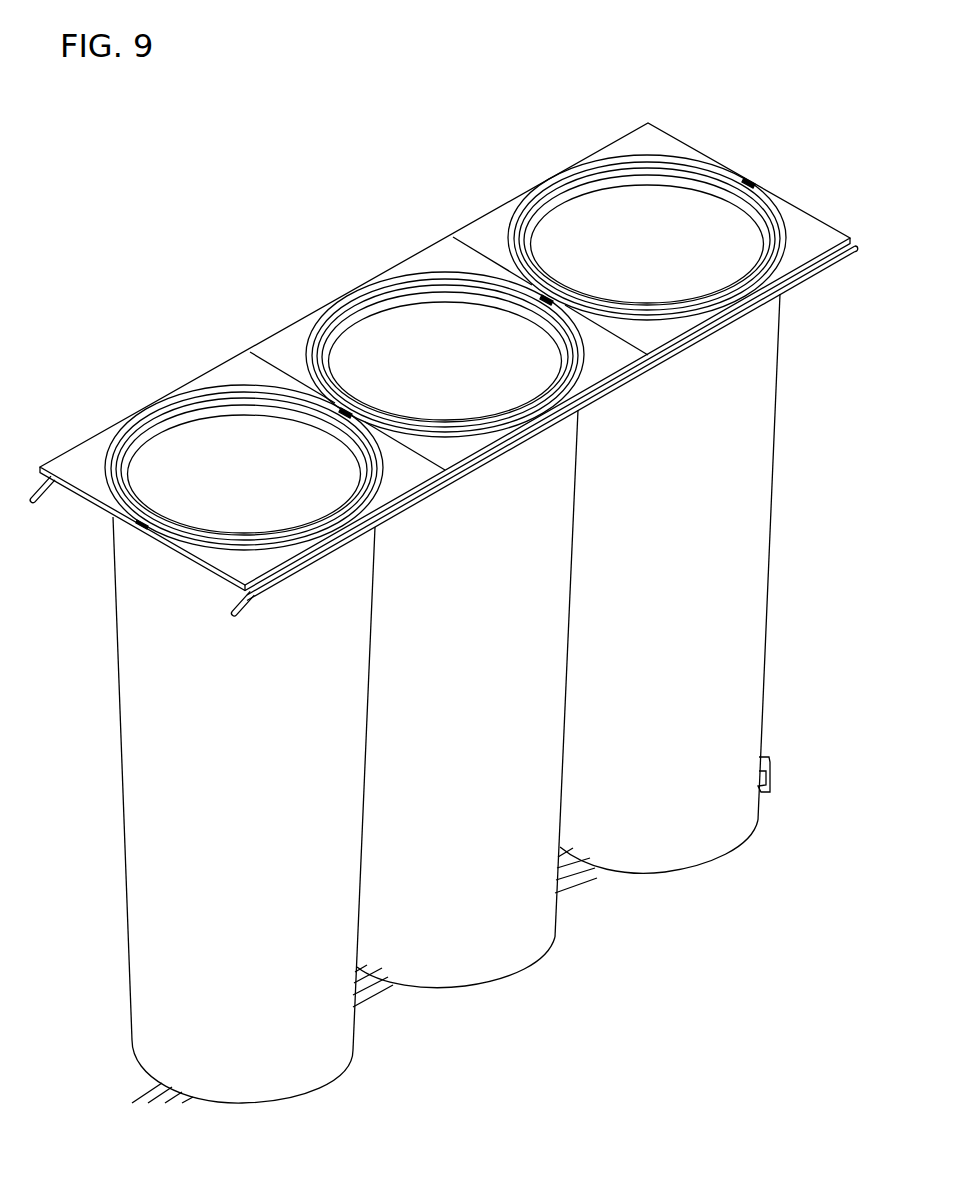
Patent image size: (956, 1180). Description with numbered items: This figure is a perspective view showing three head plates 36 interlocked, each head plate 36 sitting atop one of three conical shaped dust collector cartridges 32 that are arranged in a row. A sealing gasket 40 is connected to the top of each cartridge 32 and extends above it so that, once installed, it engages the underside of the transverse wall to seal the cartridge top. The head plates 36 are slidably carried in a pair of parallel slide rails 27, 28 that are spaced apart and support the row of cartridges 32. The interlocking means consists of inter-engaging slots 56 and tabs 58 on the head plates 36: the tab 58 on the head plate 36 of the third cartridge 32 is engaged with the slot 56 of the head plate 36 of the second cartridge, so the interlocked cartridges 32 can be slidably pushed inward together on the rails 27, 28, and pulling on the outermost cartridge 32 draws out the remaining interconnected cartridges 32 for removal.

The slide rail 27 is at (37, 505).
The slide rail 28 is at (232, 611).
The dust collector cartridge 32 is at (275, 733).
The head plate 36 is at (85, 452).
The sealing gasket 40 is at (205, 462).
The slot 56 is at (137, 528).
The tab 58 is at (345, 408).